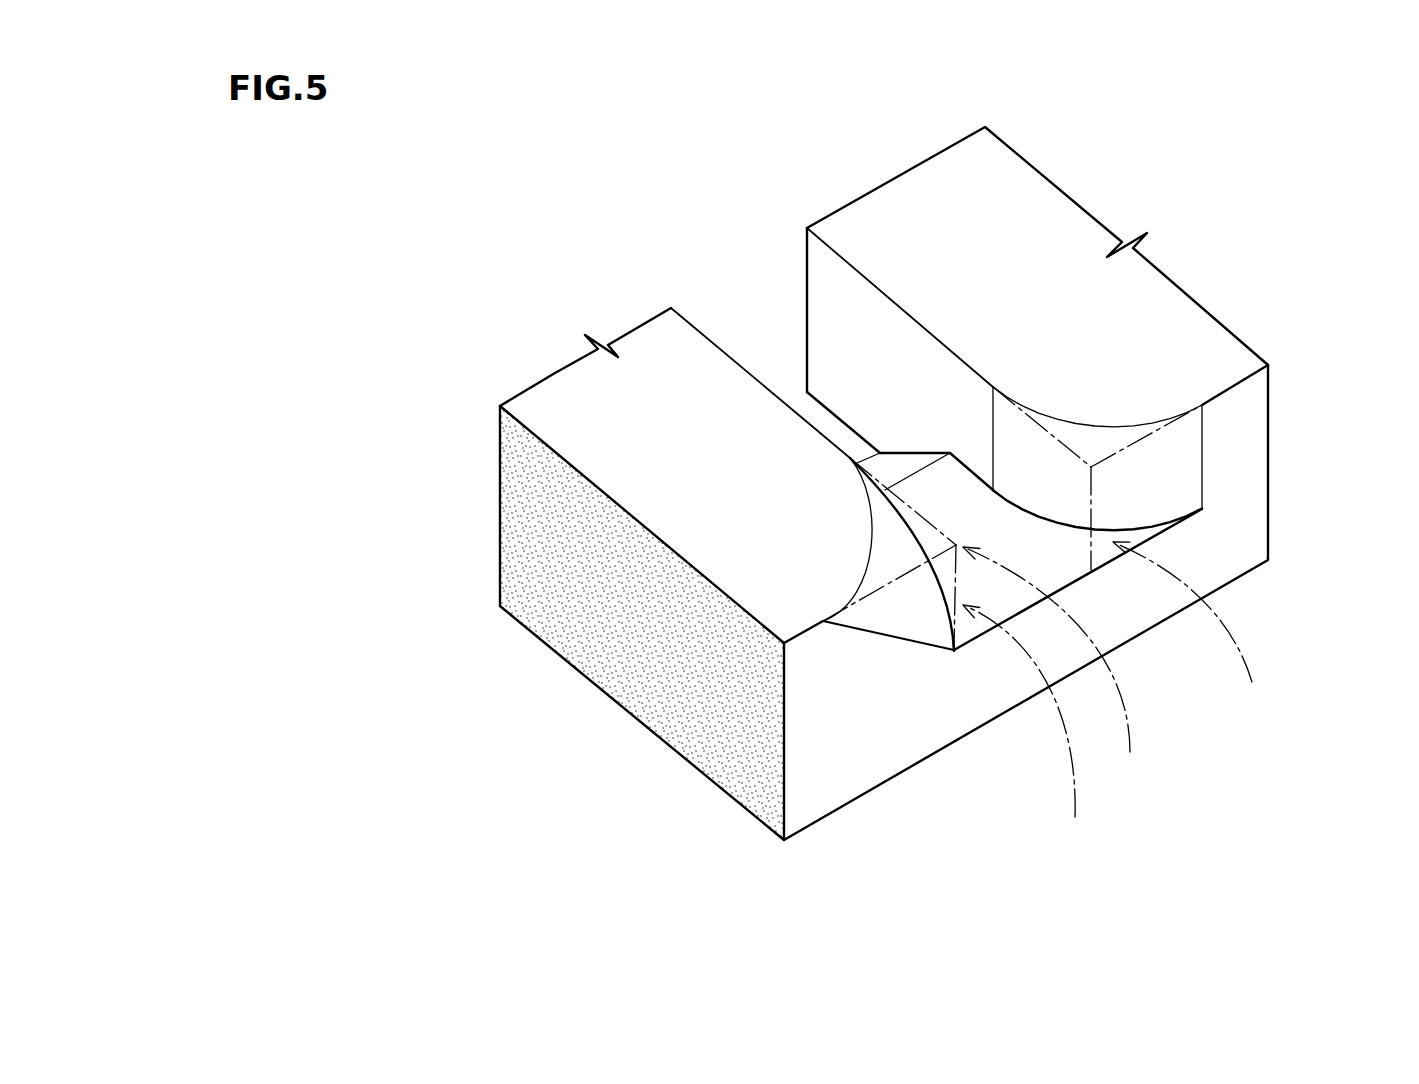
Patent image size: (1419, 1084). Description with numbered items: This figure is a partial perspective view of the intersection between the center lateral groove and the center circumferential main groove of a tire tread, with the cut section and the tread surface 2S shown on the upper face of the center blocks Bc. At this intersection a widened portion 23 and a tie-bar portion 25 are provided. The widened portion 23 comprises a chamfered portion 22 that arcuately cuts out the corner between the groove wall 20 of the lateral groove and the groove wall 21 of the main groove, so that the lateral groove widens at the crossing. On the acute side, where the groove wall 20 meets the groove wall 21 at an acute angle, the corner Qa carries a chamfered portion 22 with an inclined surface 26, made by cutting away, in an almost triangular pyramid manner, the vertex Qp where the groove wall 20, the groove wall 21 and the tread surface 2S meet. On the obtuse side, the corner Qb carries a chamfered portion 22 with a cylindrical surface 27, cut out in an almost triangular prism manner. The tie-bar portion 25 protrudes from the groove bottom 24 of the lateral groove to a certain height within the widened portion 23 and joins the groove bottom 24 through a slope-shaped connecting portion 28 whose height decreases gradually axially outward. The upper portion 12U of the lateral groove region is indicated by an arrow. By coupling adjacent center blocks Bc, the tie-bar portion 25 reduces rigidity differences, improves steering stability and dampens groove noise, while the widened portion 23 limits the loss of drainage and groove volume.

The tread surface 2S is at (583, 412).
The upper surface 12U is at (758, 278).
The groove wall 20 is at (693, 327).
The groove wall 21 is at (867, 740).
The chamfered portion 22 is at (1100, 549).
The widened portion 23 is at (1098, 586).
The groove bottom 24 is at (808, 412).
The tie-bar portion 25 is at (955, 492).
The inclined surface 26 is at (900, 608).
The cylindrical surface 27 is at (1097, 442).
The connecting portion 28 is at (894, 468).
The center block Bc is at (682, 497).
The corner on acute side Qa is at (1026, 725).
The vertex Qp is at (1054, 664).
The corner on obtuse side Qb is at (1195, 627).